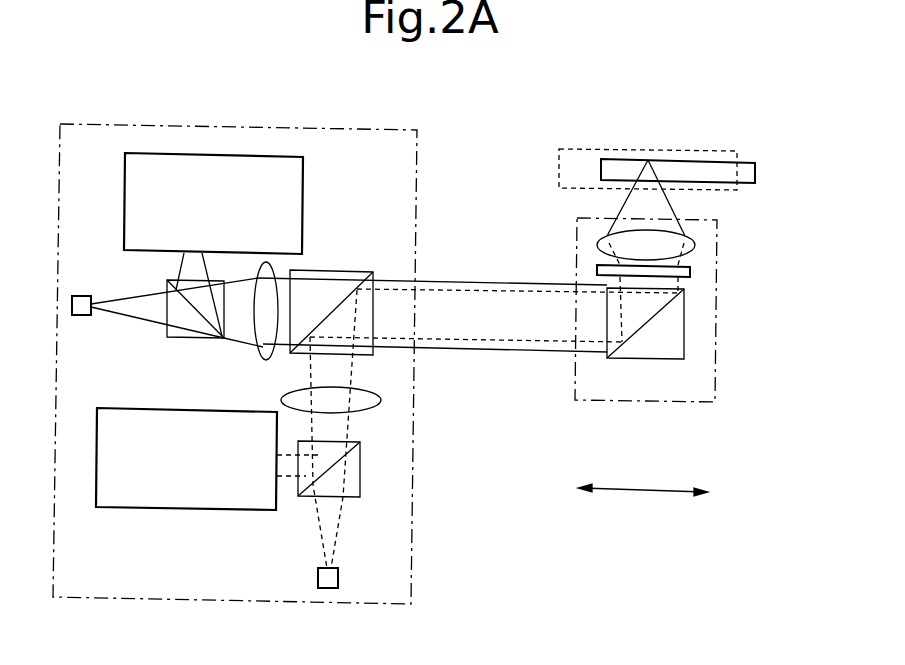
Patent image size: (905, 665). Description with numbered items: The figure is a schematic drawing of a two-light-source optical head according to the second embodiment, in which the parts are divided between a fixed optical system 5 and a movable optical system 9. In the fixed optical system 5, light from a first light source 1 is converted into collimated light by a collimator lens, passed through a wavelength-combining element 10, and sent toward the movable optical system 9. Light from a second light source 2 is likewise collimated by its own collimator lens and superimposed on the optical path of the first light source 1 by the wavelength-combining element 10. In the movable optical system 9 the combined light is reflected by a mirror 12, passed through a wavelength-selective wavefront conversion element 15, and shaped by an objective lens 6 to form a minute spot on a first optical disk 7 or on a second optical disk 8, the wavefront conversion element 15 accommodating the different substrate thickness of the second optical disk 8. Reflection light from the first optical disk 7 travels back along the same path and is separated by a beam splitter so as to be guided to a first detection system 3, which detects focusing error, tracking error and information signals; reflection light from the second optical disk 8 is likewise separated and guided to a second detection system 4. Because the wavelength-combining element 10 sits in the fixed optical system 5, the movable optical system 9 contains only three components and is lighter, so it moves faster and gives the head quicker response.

The first light source 1 is at (72, 305).
The second light source 2 is at (329, 590).
The first detection system 3 is at (200, 153).
The second detection system 4 is at (98, 431).
The fixed optical system 5 is at (214, 603).
The objective lens 6 is at (695, 247).
The first optical disk 7 is at (748, 172).
The second optical disk 8 is at (582, 153).
The movable optical system 9 is at (627, 392).
The wavelength-combining element 10 is at (337, 268).
The mirror 12 is at (680, 330).
The wavelength-selective wavefront conversion element 15 is at (690, 272).